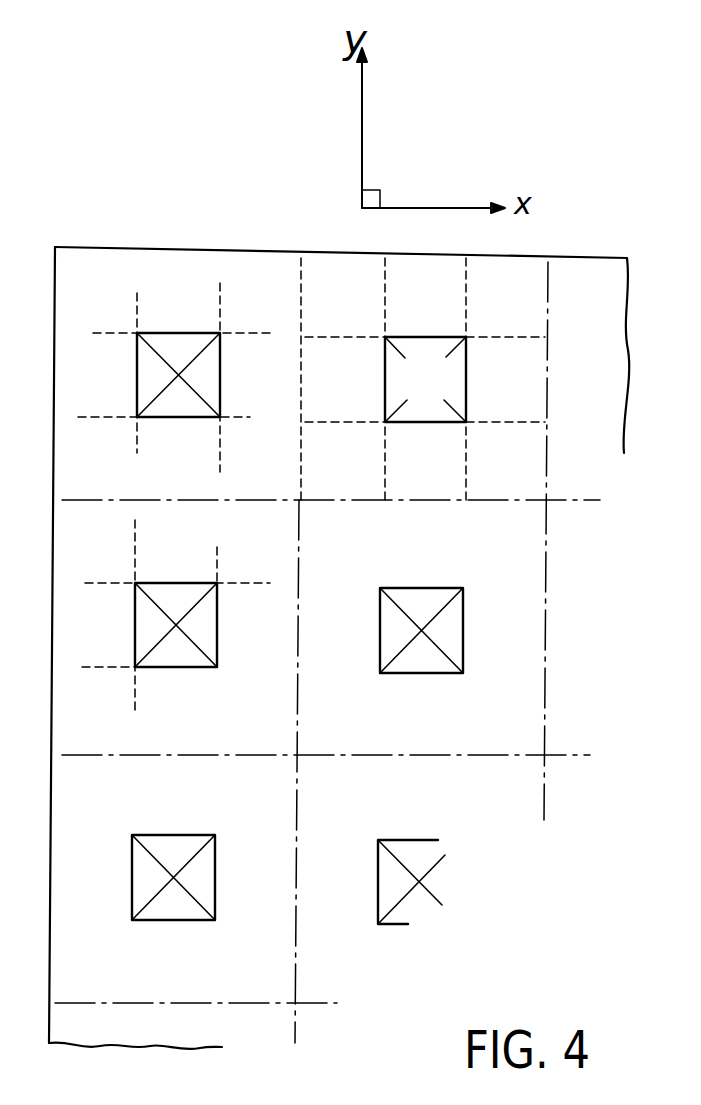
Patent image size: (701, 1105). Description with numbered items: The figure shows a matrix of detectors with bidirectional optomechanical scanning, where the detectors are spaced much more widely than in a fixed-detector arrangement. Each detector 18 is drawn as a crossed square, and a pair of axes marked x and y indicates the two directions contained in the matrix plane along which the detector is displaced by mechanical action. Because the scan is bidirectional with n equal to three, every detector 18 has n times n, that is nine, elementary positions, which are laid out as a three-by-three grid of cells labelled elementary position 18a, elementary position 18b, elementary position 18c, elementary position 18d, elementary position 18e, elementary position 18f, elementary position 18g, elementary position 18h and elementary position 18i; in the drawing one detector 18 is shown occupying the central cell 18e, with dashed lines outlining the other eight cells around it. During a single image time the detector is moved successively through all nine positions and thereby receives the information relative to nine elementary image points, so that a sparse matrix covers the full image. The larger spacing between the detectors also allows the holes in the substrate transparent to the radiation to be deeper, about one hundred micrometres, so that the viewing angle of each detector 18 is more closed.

The detector 18 is at (180, 596).
The elementary position 18a is at (318, 308).
The elementary position 18b is at (443, 308).
The elementary position 18c is at (487, 308).
The elementary position 18d is at (318, 390).
The elementary position 18e is at (443, 390).
The elementary position 18f is at (522, 390).
The elementary position 18g is at (313, 483).
The elementary position 18h is at (443, 483).
The elementary position 18i is at (528, 483).